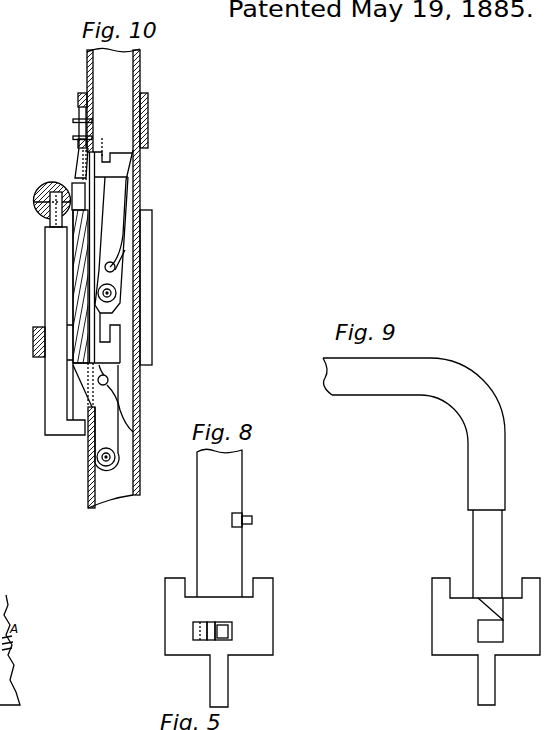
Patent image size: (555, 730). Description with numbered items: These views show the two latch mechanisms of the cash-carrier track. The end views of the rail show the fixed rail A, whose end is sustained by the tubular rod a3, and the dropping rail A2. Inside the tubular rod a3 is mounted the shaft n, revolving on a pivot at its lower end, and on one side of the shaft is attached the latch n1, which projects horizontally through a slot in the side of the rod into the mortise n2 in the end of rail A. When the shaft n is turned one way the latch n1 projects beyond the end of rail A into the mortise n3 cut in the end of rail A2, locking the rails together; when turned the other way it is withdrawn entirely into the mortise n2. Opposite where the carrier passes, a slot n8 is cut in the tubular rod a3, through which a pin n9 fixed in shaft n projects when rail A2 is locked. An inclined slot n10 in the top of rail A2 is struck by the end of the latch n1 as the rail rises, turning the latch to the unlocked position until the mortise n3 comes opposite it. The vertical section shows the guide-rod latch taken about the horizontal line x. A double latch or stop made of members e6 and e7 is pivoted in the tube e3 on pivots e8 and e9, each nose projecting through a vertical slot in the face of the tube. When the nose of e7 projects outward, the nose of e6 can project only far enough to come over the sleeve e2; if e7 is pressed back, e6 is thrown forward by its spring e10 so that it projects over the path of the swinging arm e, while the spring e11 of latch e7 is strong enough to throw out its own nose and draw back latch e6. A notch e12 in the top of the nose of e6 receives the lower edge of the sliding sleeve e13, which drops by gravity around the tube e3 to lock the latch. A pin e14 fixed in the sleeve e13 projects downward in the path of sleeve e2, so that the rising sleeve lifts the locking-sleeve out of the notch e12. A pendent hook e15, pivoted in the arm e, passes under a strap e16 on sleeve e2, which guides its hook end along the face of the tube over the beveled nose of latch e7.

In FIG. 10, the swinging arm e is at (52, 200).
In FIG. 10, the sleeve e2 is at (72, 245).
In FIG. 10, the tube e3 is at (121, 278).
In FIG. 10, the latch member e6 is at (103, 256).
In FIG. 10, the latch member e7 is at (96, 417).
In FIG. 10, the pivot e8 is at (116, 290).
In FIG. 10, the pivot e9 is at (114, 452).
In FIG. 10, the spring e10 is at (123, 252).
In FIG. 10, the spring e11 is at (110, 391).
In FIG. 10, the notch e12 is at (110, 140).
In FIG. 10, the sliding sleeve e13 is at (122, 120).
In FIG. 10, the pin e14 is at (78, 146).
In FIG. 10, the pendent hook e15 is at (78, 309).
In FIG. 10, the strap e16 is at (32, 342).
In FIG. 10, the horizontal sectional line x is at (0, 166).
In FIG. 8, the tubular rod a3 is at (219, 523).
In FIG. 8, the slot n8 is at (242, 512).
In FIG. 8, the pin n9 is at (252, 519).
In FIG. 8, the rail A is at (228, 642).
In FIG. 8, the shaft n is at (211, 622).
In FIG. 8, the latch n1 is at (232, 631).
In FIG. 8, the mortise n2 is at (197, 622).
In FIG. 9, the rail A2 is at (474, 641).
In FIG. 9, the mortise n3 is at (490, 631).
In FIG. 9, the inclined slot n10 is at (497, 600).